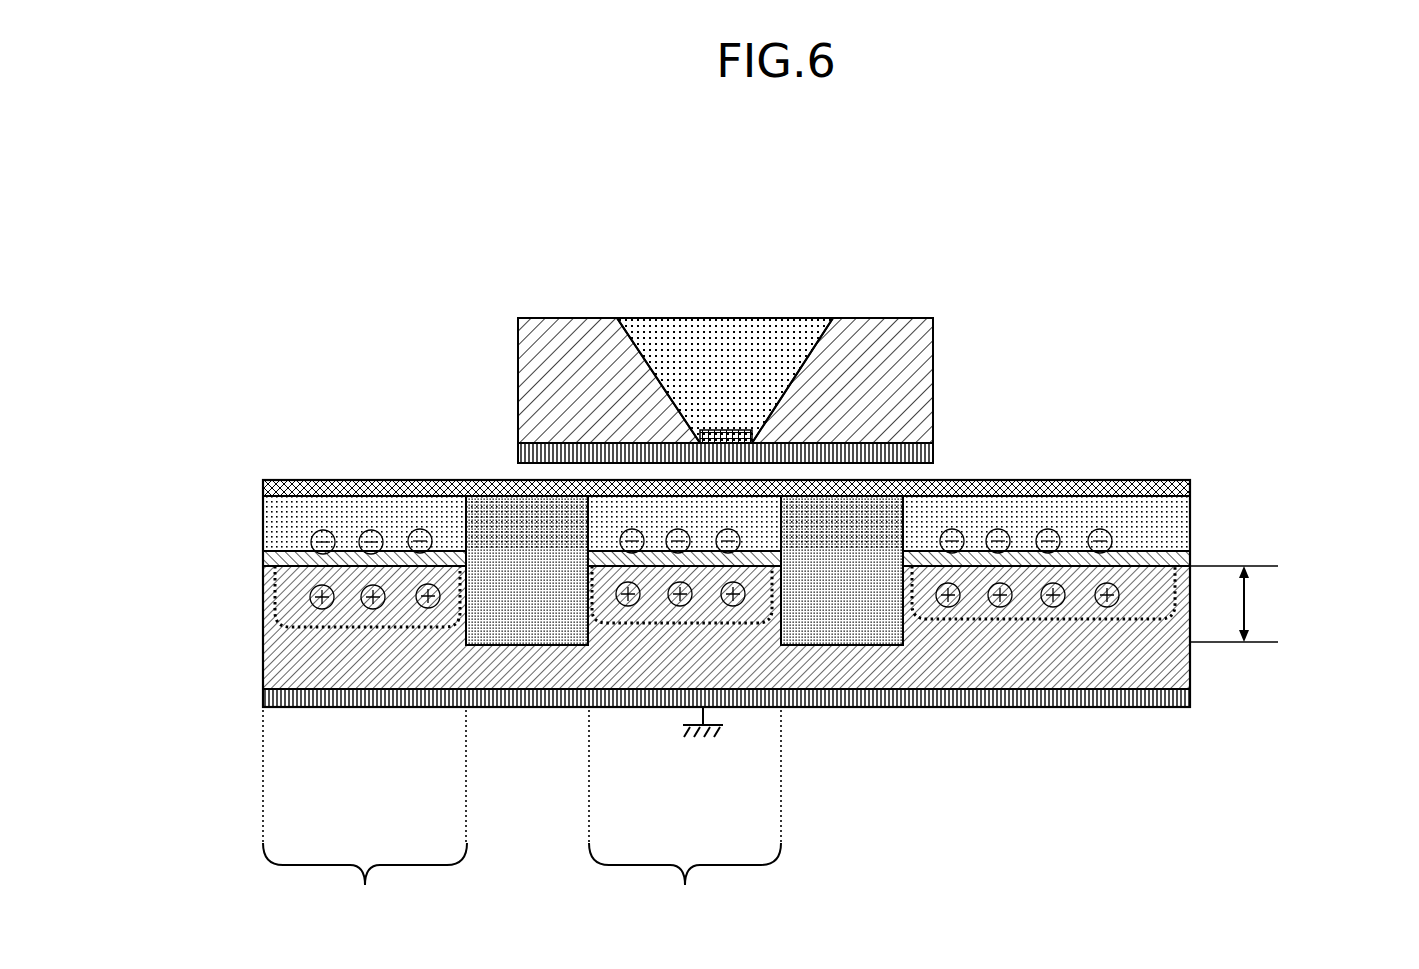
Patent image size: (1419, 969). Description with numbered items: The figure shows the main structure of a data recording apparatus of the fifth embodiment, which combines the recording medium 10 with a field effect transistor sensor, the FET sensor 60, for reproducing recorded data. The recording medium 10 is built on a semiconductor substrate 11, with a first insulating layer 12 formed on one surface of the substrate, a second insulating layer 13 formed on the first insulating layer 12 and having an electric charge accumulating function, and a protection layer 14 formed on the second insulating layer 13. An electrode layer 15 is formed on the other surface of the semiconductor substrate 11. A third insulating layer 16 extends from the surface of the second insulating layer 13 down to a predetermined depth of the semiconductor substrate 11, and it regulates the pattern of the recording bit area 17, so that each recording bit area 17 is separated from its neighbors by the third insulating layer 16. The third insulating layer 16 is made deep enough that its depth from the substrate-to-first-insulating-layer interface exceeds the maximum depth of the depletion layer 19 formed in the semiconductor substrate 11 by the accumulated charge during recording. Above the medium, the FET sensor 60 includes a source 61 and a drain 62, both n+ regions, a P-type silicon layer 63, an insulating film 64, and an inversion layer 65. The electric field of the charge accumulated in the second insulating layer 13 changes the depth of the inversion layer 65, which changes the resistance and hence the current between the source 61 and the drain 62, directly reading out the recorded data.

The recording medium 10 is at (772, 634).
The semiconductor substrate 11 is at (1183, 665).
The first insulating layer 12 is at (1182, 558).
The second insulating layer 13 is at (1180, 508).
The protection layer 14 is at (1066, 480).
The electrode layer 15 is at (1190, 700).
The third insulating layer 16 is at (488, 522).
The recording bit area 17 is at (522, 815).
The depletion layer 19 is at (760, 645).
The FET sensor 60 is at (764, 305).
The source 61 is at (583, 332).
The drain 62 is at (866, 332).
The P-type silicon layer 63 is at (695, 332).
The insulating film 64 is at (935, 455).
The inversion layer 65 is at (748, 430).